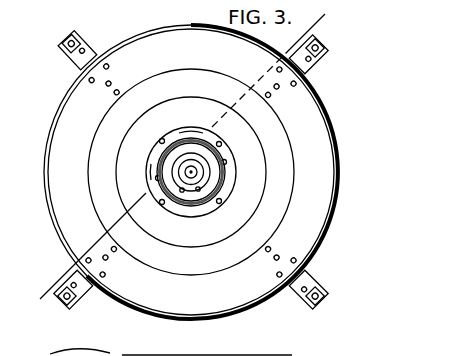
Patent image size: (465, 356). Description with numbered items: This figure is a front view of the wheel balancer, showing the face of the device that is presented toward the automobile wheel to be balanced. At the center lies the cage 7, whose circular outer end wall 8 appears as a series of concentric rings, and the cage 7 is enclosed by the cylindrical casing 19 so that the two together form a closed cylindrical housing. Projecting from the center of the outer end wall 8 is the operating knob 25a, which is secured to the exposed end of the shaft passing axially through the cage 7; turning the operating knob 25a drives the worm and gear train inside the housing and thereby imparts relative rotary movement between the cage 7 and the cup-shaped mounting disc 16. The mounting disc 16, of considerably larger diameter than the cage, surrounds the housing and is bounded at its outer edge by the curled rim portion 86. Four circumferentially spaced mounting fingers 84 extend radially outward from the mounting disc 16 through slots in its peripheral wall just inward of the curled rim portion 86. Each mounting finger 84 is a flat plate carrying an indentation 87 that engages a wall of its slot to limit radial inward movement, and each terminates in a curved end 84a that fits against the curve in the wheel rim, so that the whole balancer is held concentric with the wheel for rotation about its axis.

The cage 7 is at (229, 173).
The circular outer end wall 8 is at (312, 15).
The cup-shaped mounting disc 16 is at (318, 182).
The cylindrical casing 19 is at (189, 198).
The operating knob 25a is at (207, 188).
The mounting finger 84 is at (86, 42).
The curved end 84a is at (372, 318).
The curled rim portion 86 is at (48, 143).
The indentation 87 is at (75, 52).